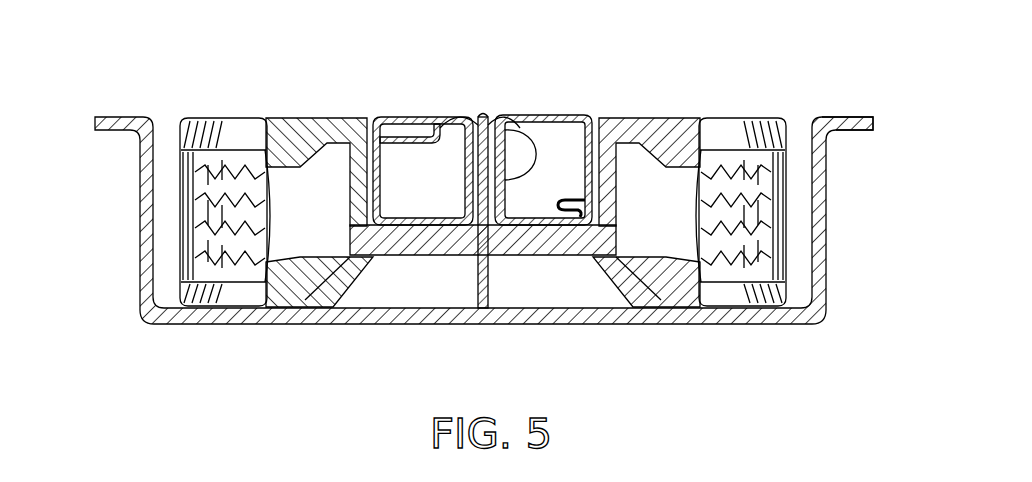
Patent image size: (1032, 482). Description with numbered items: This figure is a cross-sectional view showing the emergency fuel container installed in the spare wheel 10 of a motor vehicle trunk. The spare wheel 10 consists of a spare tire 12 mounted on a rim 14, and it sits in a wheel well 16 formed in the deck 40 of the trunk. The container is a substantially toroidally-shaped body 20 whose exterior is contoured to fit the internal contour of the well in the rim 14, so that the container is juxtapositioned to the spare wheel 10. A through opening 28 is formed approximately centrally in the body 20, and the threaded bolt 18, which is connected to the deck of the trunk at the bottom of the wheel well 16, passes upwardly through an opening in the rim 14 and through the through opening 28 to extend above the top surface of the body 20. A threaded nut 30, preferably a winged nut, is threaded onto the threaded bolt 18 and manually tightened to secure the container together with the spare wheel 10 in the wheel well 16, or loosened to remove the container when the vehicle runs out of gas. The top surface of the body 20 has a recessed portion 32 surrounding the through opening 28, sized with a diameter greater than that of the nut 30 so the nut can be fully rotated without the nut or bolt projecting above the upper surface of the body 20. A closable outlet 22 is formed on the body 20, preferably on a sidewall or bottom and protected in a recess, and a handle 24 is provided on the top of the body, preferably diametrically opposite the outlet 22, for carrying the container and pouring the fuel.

The spare wheel 10 is at (172, 96).
The spare tire 12 is at (173, 218).
The rim 14 is at (297, 120).
The wheel well 16 is at (828, 227).
The threaded bolt 18 is at (478, 282).
The body 20 is at (587, 120).
The closable outlet 22 is at (581, 258).
The handle 24 is at (393, 117).
The through opening 28 is at (523, 120).
The threaded nut 30 is at (457, 120).
The recessed portion 32 is at (450, 120).
The deck 40 is at (867, 117).